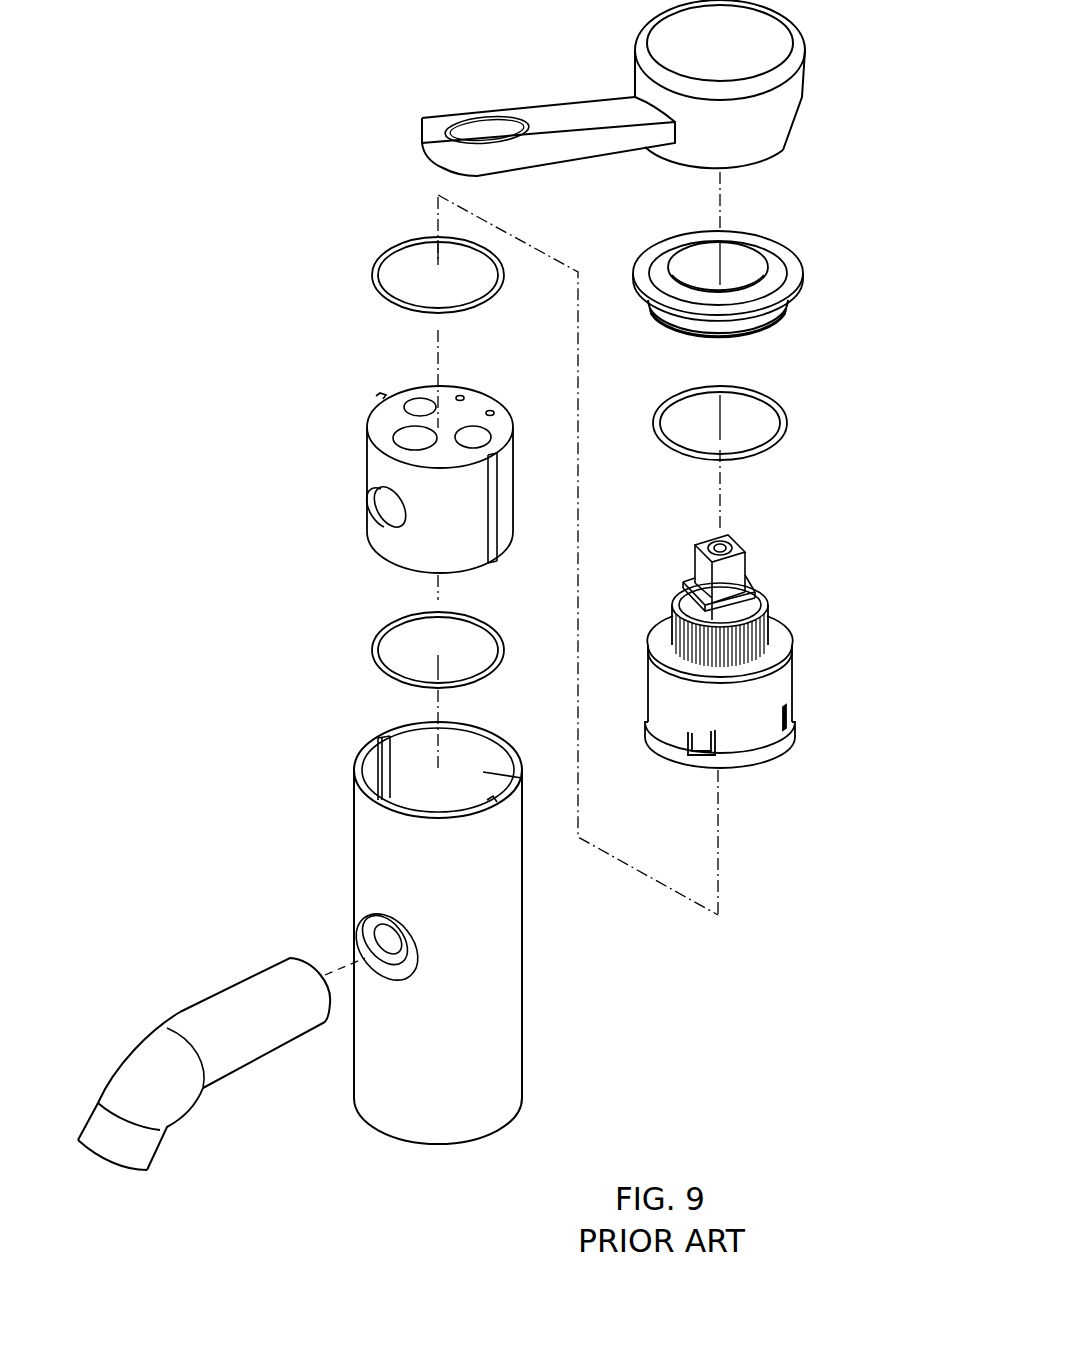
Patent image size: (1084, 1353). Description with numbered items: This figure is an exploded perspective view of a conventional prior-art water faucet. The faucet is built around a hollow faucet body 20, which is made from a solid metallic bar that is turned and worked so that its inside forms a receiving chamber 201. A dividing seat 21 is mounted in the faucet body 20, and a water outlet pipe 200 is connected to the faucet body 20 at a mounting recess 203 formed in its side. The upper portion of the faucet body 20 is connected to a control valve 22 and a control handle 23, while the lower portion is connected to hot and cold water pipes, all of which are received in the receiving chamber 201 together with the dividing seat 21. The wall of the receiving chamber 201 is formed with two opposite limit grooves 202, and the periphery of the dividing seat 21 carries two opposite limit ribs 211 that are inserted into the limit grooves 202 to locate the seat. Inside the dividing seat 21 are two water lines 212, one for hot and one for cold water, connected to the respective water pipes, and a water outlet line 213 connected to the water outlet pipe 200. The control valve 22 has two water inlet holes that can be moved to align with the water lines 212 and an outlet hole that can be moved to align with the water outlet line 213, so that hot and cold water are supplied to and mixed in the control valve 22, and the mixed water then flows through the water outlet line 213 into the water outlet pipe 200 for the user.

The faucet body 20 is at (436, 906).
The water outlet pipe 200 is at (180, 1012).
The receiving chamber 201 is at (522, 778).
The limit grooves 202 is at (382, 738).
The mounting recess 203 is at (367, 927).
The dividing seat 21 is at (353, 449).
The limit ribs 211 is at (377, 400).
The water lines 212 is at (420, 407).
The water outlet line 213 is at (410, 438).
The control valve 22 is at (775, 768).
The control handle 23 is at (622, 68).